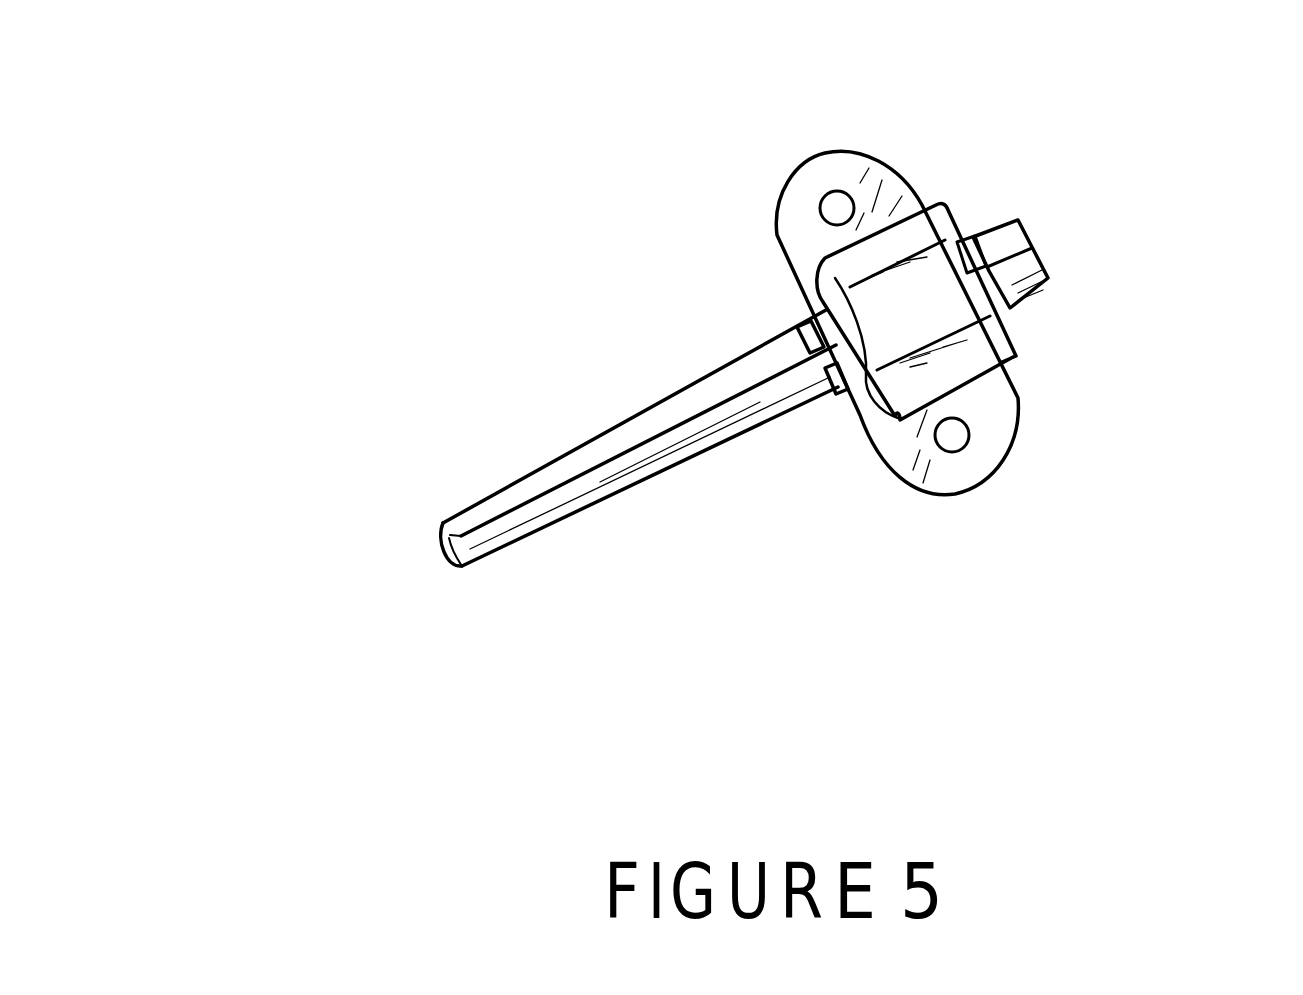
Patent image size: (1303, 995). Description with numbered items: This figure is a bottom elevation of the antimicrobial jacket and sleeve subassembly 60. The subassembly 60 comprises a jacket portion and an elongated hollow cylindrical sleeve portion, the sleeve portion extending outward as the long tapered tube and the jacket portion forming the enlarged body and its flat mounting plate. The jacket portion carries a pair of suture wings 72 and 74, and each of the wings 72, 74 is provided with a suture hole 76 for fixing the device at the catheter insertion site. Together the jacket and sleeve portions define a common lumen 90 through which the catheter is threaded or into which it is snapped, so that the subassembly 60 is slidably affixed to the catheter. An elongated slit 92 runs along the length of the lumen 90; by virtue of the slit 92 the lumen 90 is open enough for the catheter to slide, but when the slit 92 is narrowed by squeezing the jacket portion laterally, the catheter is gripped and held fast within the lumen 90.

The jacket and sleeve subassembly 60 is at (612, 398).
The suture wing 72 is at (1013, 390).
The suture wing 74 is at (910, 178).
The suture hole 76 is at (825, 203).
The common lumen 90 is at (443, 532).
The elongated slit 92 is at (598, 470).